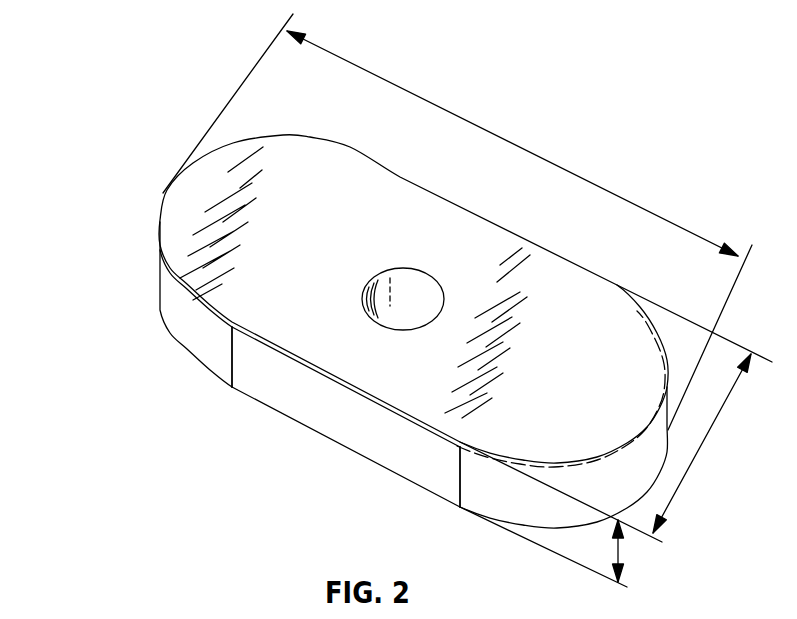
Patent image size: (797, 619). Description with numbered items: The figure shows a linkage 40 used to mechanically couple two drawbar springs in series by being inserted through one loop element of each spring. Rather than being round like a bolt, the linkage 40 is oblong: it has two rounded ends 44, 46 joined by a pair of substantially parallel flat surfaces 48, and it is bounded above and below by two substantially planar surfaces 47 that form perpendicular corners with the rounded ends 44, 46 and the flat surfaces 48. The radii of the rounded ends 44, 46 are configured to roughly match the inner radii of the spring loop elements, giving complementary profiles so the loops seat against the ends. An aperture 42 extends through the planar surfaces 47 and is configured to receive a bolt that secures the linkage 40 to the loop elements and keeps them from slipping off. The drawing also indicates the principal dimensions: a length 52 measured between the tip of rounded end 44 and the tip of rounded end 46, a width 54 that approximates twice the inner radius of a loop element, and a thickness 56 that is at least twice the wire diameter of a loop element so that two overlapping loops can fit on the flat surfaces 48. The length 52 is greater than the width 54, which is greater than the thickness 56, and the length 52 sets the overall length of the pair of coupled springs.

The linkage 40 is at (348, 281).
The aperture 42 is at (402, 290).
The rounded end 44 is at (170, 302).
The rounded end 46 is at (649, 476).
The planar surface 47 is at (589, 392).
The flat surface 48 is at (336, 414).
The length 52 is at (457, 222).
The width 54 is at (616, 413).
The thickness 56 is at (558, 547).